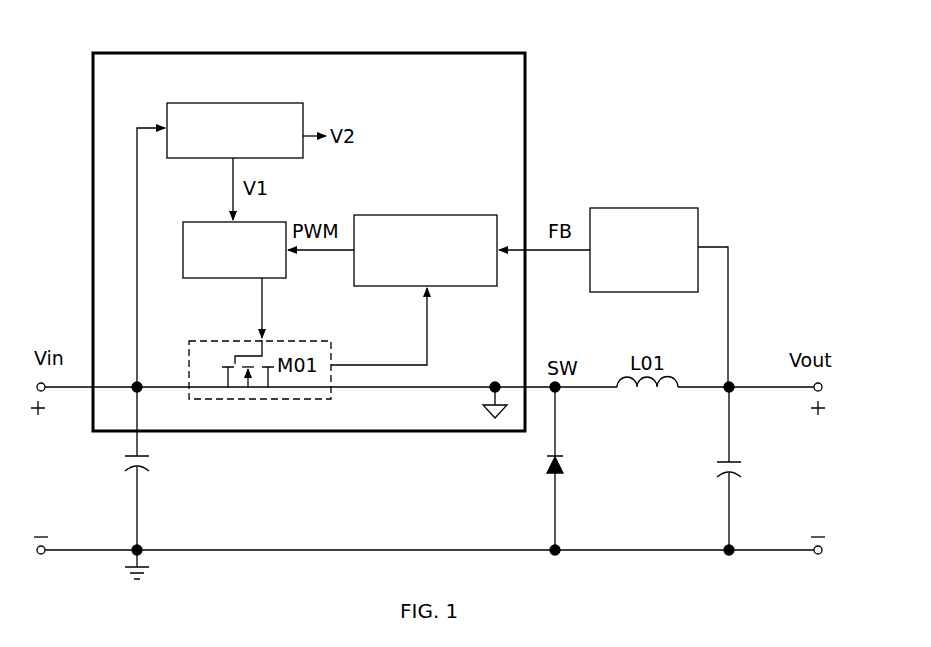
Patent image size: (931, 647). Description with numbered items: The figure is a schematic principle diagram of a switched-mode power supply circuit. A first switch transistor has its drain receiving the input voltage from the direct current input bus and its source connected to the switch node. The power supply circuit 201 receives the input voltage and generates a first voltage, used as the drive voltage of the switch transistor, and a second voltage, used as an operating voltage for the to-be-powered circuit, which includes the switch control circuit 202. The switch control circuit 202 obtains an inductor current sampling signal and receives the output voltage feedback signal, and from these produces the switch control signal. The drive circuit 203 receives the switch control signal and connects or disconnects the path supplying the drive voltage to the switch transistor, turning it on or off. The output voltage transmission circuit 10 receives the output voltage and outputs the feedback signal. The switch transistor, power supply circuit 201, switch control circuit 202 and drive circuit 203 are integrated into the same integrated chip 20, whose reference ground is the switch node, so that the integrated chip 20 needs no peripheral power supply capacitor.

The output voltage transmission circuit 10 is at (655, 200).
The integrated chip 20 is at (356, 53).
The power supply circuit 201 is at (221, 103).
The switch control circuit 202 is at (412, 215).
The drive circuit 203 is at (211, 222).